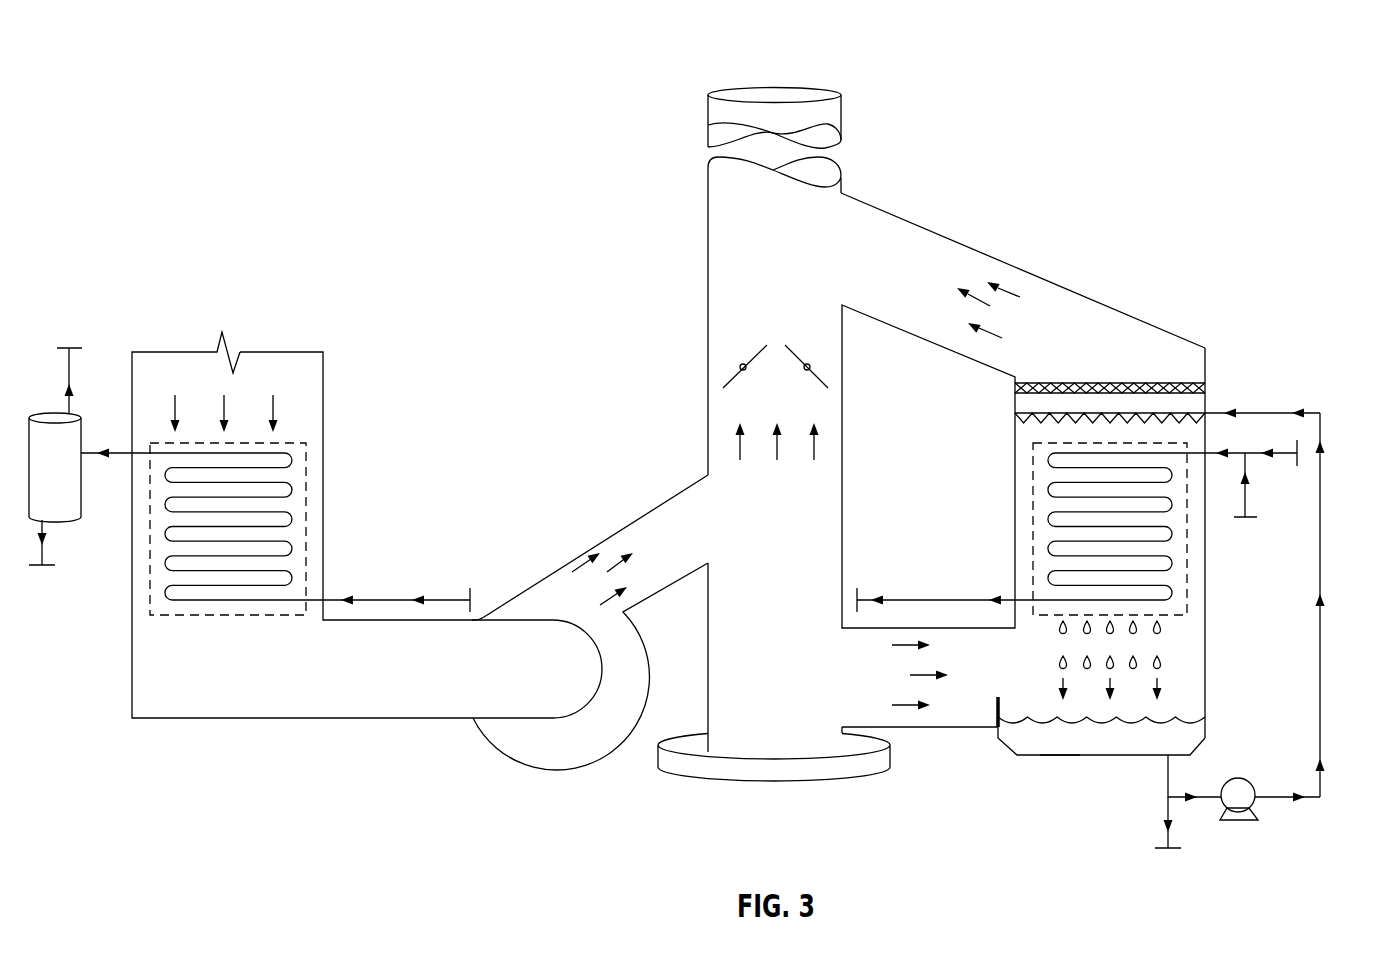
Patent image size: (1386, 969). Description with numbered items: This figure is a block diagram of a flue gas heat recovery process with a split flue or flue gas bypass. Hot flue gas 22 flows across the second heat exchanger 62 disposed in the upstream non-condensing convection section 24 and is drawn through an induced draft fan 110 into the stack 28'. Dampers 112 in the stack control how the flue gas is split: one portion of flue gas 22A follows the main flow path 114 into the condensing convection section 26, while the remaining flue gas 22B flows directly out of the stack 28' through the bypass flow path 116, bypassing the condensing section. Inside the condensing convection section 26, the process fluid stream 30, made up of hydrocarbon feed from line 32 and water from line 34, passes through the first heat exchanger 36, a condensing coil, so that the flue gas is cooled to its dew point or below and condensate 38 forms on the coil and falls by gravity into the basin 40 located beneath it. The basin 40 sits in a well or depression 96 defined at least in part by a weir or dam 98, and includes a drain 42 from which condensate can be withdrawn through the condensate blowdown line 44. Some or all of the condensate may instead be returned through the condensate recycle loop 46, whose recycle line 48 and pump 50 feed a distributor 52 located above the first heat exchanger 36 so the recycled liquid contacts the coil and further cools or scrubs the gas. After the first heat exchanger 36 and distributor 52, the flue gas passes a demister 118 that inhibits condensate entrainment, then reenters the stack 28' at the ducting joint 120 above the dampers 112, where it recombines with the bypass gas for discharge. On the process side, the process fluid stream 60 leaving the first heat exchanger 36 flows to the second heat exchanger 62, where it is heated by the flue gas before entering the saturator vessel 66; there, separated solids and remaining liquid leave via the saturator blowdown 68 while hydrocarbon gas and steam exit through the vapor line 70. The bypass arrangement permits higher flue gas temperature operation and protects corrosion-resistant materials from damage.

The flue gas 22 is at (222, 411).
The flue gas 22A is at (905, 708).
The flue gas 22B is at (742, 445).
The non-condensing convection section 24 is at (409, 450).
The condensing convection section 26 is at (1201, 310).
The stack 28' is at (739, 420).
The process fluid stream 30 is at (1237, 452).
The hydrocarbon feed line 32 is at (1250, 505).
The water line 34 is at (1275, 452).
The first heat exchanger 36 is at (1032, 525).
The condensate 38 is at (1162, 663).
The basin 40 is at (1027, 742).
The drain 42 is at (1166, 768).
The condensate blowdown line 44 is at (1166, 812).
The condensate recycle loop 46 is at (1330, 742).
The recycle line 48 is at (1322, 708).
The pump 50 is at (1245, 800).
The distributor 52 is at (1022, 413).
The process fluid stream 60 is at (398, 598).
The second heat exchanger 62 is at (305, 553).
The saturator vessel 66 is at (58, 507).
The saturator blowdown 68 is at (42, 552).
The vapor line 70 is at (69, 372).
The well or depression 96 is at (1058, 757).
The weir 98 is at (999, 697).
The induced draft fan 110 is at (553, 762).
The dampers 112 is at (723, 388).
The main flow path 114 is at (867, 688).
The bypass flow path 116 is at (800, 430).
The demister 118 is at (1172, 381).
The ducting joint 120 is at (862, 202).